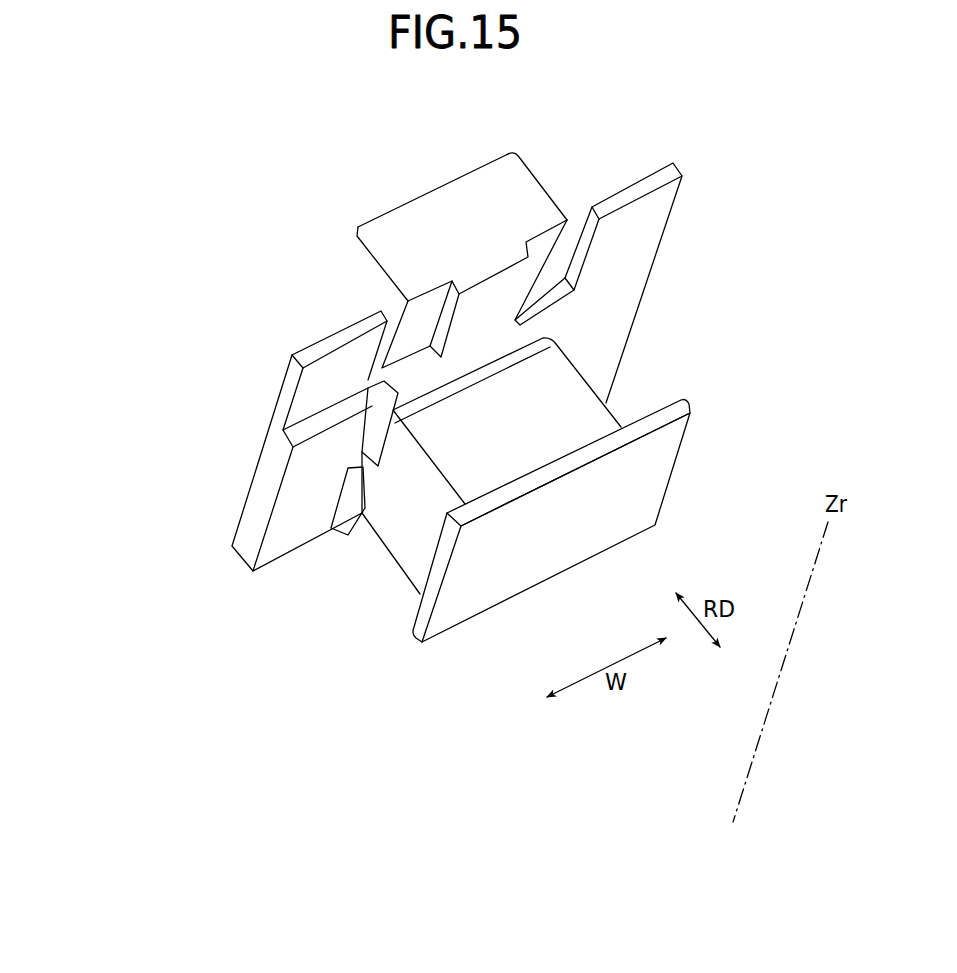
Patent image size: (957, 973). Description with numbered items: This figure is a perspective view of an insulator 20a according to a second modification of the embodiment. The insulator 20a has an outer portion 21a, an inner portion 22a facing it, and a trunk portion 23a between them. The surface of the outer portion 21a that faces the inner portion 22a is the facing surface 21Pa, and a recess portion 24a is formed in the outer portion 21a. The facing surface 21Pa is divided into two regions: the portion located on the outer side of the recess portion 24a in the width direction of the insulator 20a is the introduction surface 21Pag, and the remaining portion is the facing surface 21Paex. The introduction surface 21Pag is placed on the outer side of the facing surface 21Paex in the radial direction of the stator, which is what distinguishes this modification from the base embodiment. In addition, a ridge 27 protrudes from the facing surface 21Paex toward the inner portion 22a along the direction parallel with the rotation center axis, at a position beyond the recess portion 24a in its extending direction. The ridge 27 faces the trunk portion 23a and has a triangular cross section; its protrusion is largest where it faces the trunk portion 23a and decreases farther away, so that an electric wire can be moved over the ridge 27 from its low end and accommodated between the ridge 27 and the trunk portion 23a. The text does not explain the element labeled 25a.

The insulator 20a is at (314, 168).
The outer portion 21a is at (476, 188).
The inner portion 22a is at (556, 558).
The trunk portion 23a is at (423, 537).
The recess portion 24a is at (401, 356).
The post 25a is at (375, 386).
The ridge 27 is at (337, 538).
The facing surface 21Pa is at (131, 400).
The introduction surface 21Pag is at (316, 398).
The facing surface 21Paex is at (613, 292).